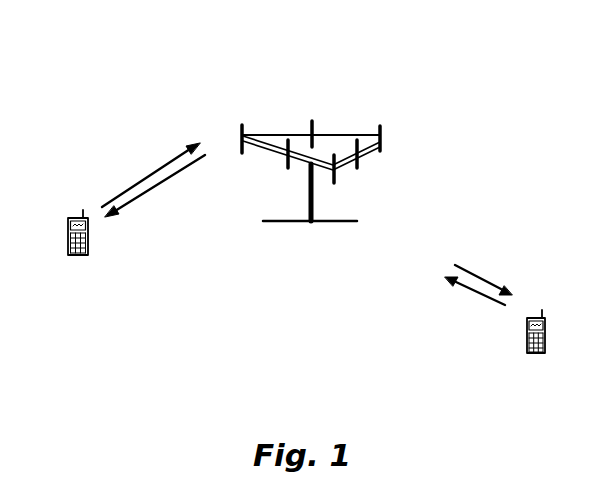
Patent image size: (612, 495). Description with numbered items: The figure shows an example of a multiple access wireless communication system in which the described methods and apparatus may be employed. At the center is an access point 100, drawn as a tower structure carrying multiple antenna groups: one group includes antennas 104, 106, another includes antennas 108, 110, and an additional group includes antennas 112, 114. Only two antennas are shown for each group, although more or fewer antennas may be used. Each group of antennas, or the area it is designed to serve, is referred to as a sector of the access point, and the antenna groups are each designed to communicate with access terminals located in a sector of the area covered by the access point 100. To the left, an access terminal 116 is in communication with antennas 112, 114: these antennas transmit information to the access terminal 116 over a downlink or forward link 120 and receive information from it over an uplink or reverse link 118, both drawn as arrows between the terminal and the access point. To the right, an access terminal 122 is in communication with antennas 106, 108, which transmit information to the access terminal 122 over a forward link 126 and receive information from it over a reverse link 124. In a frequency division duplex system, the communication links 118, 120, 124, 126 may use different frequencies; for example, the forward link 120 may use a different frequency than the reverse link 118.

The access point 100 is at (312, 189).
The antenna 104 is at (336, 182).
The antenna 106 is at (359, 166).
The antenna 108 is at (384, 146).
The antenna 110 is at (314, 123).
The antenna 112 is at (244, 135).
The antenna 114 is at (288, 170).
The access terminal 116 is at (81, 215).
The reverse link 118 is at (149, 172).
The forward link 120 is at (163, 180).
The access terminal 122 is at (538, 314).
The reverse link 124 is at (465, 288).
The forward link 126 is at (488, 277).